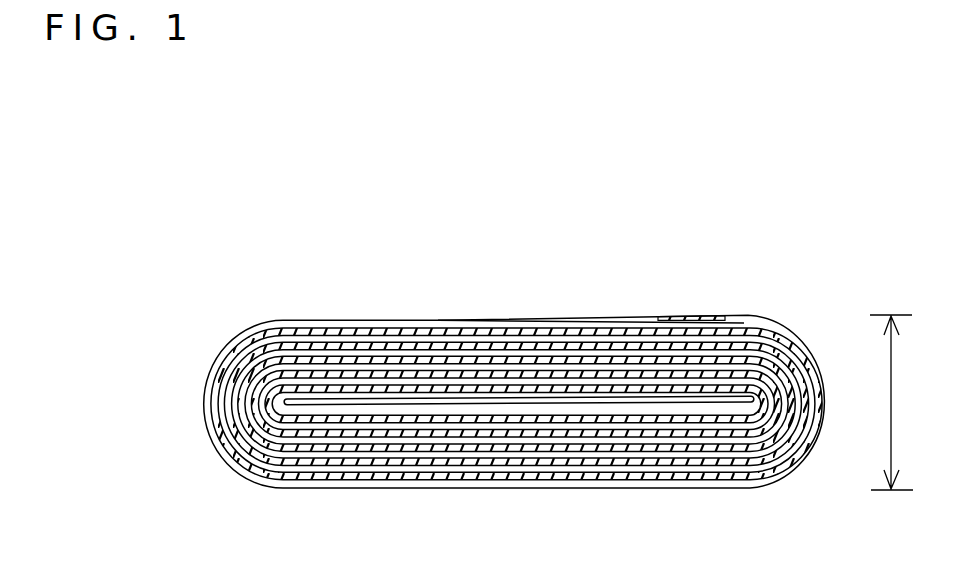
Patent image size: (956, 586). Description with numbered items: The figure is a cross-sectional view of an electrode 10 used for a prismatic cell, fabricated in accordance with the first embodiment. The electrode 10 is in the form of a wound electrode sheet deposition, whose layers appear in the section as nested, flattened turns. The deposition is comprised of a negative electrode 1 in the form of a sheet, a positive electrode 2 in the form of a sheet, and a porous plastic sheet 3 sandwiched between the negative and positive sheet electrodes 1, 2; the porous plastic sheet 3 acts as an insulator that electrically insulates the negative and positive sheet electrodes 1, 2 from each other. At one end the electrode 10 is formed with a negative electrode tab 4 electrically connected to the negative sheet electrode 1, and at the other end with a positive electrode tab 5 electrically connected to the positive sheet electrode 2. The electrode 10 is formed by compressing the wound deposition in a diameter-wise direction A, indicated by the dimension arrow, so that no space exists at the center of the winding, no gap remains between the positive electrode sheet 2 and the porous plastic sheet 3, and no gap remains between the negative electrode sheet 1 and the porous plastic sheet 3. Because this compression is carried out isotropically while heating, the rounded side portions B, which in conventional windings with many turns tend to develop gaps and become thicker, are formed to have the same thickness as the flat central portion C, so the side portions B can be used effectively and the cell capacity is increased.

The negative electrode 1 is at (748, 312).
The positive electrode 2 is at (717, 470).
The porous plastic sheet 3 is at (540, 312).
The negative electrode tab 4 is at (678, 308).
The positive electrode tab 5 is at (504, 392).
The electrode 10 is at (352, 304).
The direction A is at (893, 402).
The side portions B is at (172, 434).
The central portion C is at (503, 490).